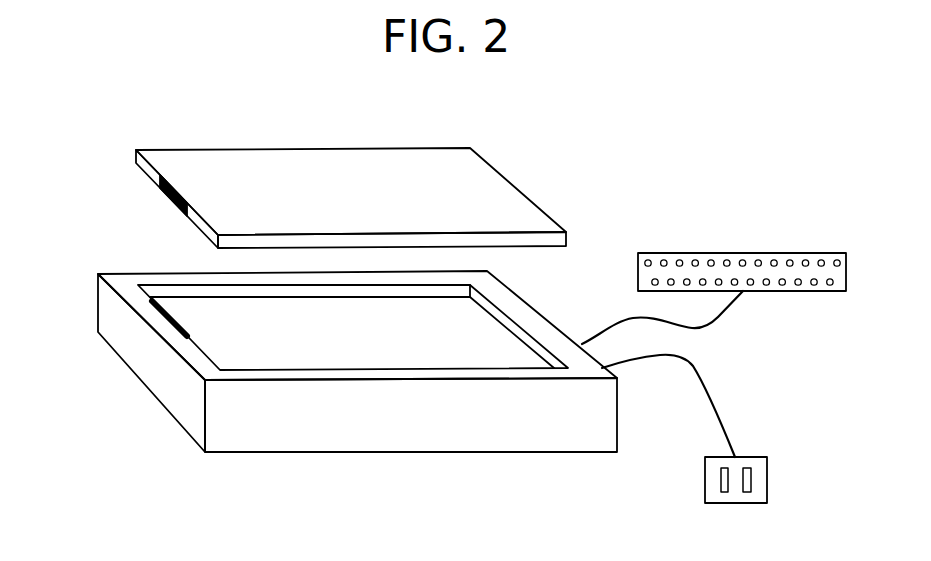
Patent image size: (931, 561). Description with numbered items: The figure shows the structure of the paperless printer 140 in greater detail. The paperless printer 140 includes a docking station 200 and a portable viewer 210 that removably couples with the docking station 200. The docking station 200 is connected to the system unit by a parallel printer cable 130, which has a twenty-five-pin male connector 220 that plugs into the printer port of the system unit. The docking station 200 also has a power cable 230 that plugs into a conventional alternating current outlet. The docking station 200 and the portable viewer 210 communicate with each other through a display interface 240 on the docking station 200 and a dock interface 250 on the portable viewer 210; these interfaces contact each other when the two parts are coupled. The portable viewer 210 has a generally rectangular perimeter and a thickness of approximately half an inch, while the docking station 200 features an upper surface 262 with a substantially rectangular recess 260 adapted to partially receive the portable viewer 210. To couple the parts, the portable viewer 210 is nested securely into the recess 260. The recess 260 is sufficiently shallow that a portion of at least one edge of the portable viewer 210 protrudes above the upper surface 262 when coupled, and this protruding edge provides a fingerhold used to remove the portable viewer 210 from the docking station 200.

The paperless printer 140 is at (642, 131).
The portable viewer 210 is at (315, 180).
The dock interface 250 is at (157, 190).
The upper surface 262 is at (133, 282).
The display interface 240 is at (152, 313).
The docking station 200 is at (361, 340).
The recess 260 is at (452, 315).
The 25-pin male connector 220 is at (770, 253).
The parallel printer cable 130 is at (718, 317).
The power cable 230 is at (693, 372).